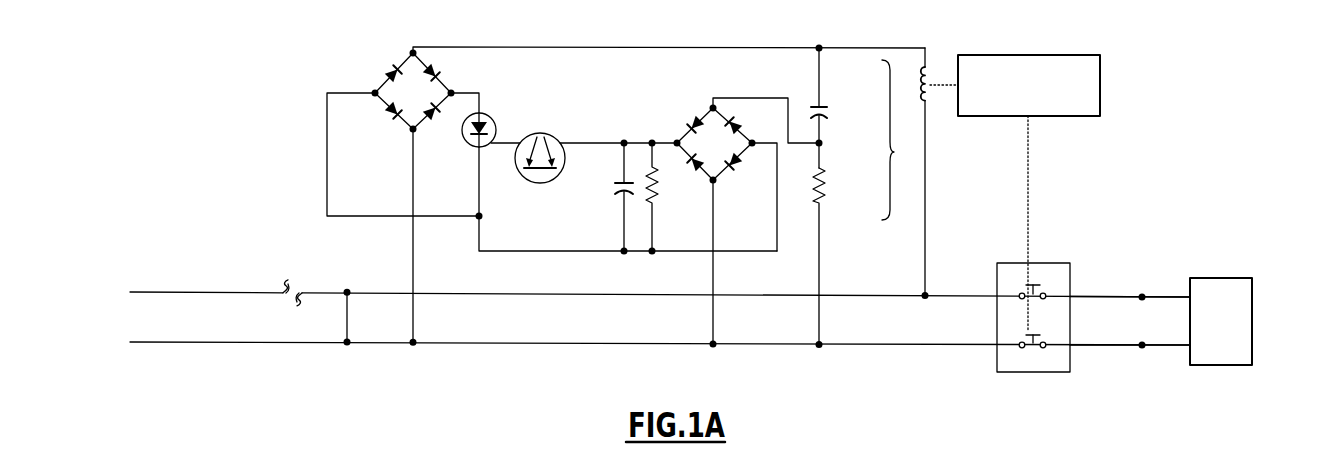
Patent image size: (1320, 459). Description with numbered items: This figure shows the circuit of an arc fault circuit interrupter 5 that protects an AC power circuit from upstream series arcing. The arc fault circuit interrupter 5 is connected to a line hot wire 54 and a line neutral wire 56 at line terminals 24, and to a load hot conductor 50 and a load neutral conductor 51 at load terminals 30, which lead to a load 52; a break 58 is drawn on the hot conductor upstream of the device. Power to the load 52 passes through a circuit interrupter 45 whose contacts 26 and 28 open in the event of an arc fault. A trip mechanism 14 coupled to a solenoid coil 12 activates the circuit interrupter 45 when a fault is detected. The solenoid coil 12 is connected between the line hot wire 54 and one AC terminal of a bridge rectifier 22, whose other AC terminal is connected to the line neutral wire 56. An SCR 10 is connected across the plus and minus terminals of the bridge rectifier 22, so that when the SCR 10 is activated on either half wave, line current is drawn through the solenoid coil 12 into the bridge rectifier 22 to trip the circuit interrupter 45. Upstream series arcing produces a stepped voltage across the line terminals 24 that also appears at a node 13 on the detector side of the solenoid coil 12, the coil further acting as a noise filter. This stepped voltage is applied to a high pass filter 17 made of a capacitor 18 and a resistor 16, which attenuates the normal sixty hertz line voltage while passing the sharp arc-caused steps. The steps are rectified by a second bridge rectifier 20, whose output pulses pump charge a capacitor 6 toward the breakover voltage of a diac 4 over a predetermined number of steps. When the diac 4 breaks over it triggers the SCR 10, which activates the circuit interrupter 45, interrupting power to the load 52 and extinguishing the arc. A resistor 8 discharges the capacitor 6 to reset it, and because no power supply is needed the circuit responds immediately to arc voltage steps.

The arc fault circuit interrupter 5 is at (681, 42).
The bridge rectifier 22 is at (396, 68).
The SCR 10 is at (492, 120).
The diac 4 is at (560, 142).
The pump charge capacitor 6 is at (618, 190).
The resistor 8 is at (656, 190).
The bridge rectifier 20 is at (722, 168).
The node 13 is at (820, 47).
The capacitor 18 is at (826, 106).
The high pass filter 17 is at (904, 140).
The resistor 16 is at (824, 195).
The solenoid coil 12 is at (934, 68).
The trip mechanism 14 is at (1084, 55).
The circuit interrupter 45 is at (1062, 263).
The contact 26 is at (1020, 290).
The contact 28 is at (1025, 341).
The load hot conductor 50 is at (1085, 296).
The load neutral conductor 51 is at (1085, 345).
The load terminals 30 is at (1142, 297).
The load 52 is at (1252, 300).
The line hot wire 54 is at (151, 292).
The line break 58 is at (290, 285).
The line terminals 24 is at (347, 342).
The line neutral wire 56 is at (150, 342).